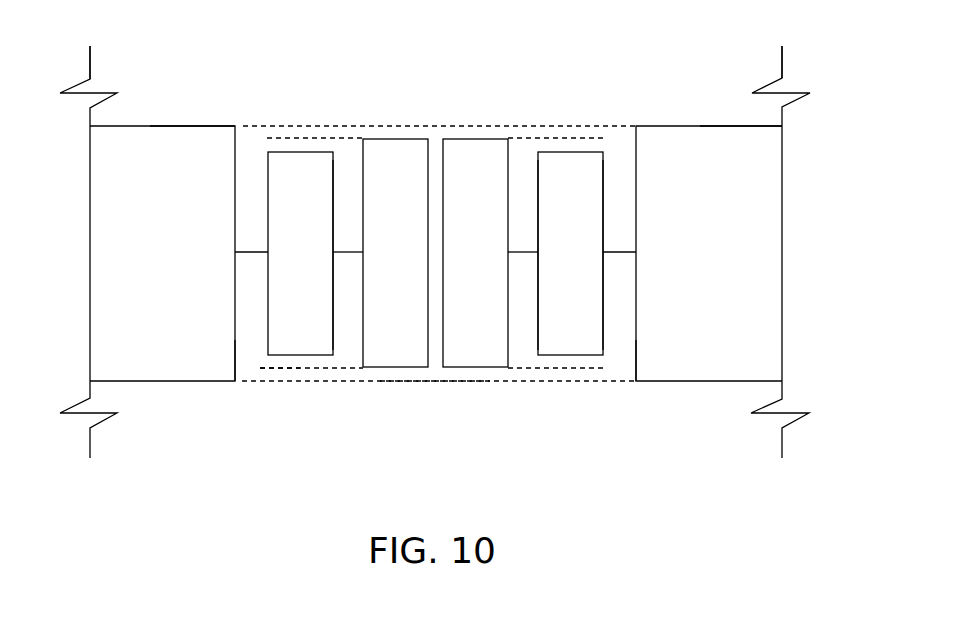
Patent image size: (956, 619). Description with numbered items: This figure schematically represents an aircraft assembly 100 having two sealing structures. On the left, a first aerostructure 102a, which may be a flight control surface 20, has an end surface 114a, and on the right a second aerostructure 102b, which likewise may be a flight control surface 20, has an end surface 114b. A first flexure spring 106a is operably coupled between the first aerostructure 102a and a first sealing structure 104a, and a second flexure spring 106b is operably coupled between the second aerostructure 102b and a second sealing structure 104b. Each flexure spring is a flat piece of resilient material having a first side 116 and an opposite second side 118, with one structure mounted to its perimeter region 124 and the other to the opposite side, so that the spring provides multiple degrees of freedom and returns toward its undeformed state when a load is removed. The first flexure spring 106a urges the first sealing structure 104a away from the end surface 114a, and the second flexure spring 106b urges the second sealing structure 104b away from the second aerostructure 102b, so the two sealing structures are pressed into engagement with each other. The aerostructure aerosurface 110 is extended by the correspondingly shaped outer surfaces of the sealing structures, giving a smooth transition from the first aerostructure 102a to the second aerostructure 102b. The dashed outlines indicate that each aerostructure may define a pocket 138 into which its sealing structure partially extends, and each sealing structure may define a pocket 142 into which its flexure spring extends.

The aircraft assembly 100 is at (417, 40).
The first aerostructure 102a is at (155, 126).
The second aerostructure 102b is at (703, 126).
The flight control surface 20 is at (195, 112).
The aerostructure aerosurface 110 is at (212, 125).
The perimeter region 124 is at (265, 153).
The first flexure spring 106a is at (310, 152).
The first sealing structure 104a is at (407, 139).
The second sealing structure 104b is at (467, 139).
The second flexure spring 106b is at (570, 152).
The second side 118 is at (335, 210).
The first side 116 is at (605, 305).
The end surface of first aerostructure 114a is at (235, 357).
The end surface of second aerostructure 114b is at (635, 357).
The pocket of sealing structure 142 is at (275, 362).
The pocket of aerostructure 138 is at (388, 373).